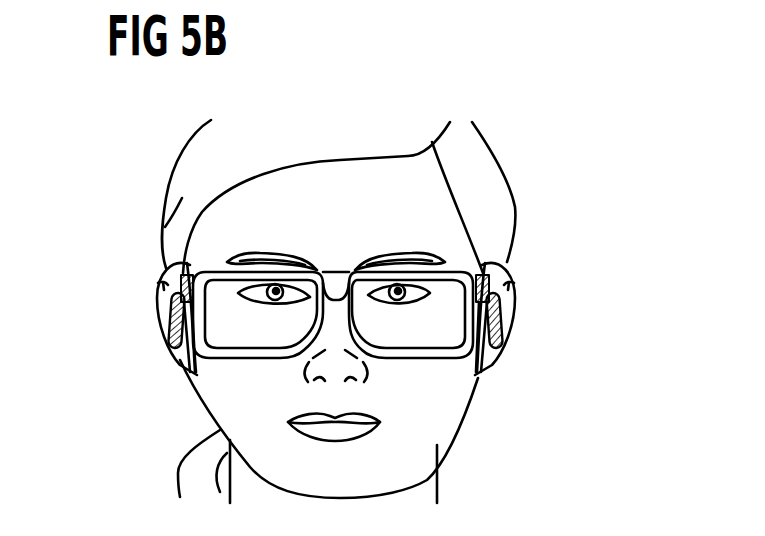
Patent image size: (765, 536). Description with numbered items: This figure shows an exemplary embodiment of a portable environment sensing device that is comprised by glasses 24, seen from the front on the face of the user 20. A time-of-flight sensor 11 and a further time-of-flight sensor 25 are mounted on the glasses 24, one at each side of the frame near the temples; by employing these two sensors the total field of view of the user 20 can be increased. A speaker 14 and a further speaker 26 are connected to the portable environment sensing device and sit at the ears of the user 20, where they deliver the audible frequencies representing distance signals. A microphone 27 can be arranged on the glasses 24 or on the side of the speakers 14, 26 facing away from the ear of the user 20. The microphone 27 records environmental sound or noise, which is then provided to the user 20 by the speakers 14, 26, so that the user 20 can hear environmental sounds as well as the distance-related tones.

The user 20 is at (428, 188).
The time-of-flight sensor 11 is at (500, 268).
The speaker 14 is at (503, 320).
The glasses 24 is at (465, 343).
The further time-of-flight sensor 25 is at (180, 280).
The further speaker 26 is at (172, 317).
The microphone 27 is at (172, 340).